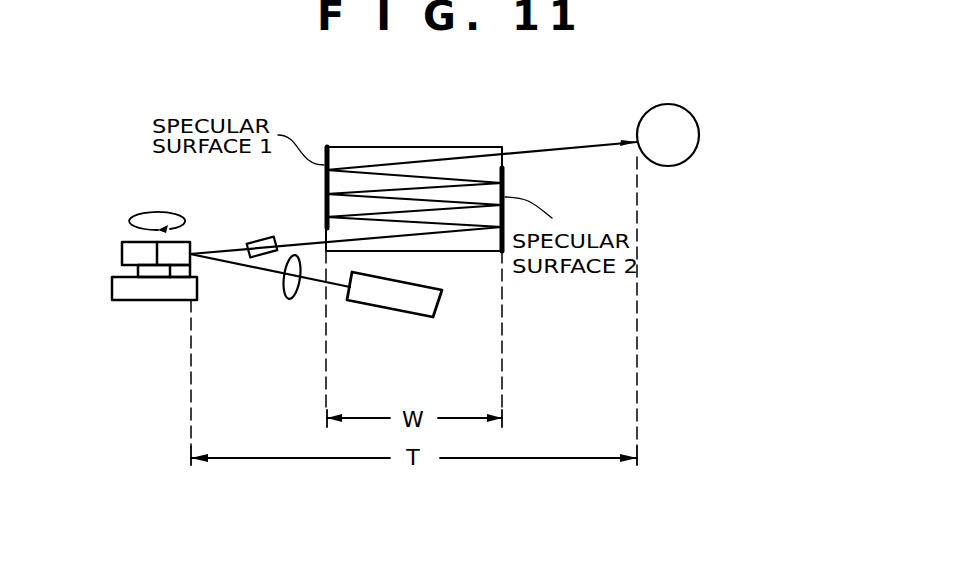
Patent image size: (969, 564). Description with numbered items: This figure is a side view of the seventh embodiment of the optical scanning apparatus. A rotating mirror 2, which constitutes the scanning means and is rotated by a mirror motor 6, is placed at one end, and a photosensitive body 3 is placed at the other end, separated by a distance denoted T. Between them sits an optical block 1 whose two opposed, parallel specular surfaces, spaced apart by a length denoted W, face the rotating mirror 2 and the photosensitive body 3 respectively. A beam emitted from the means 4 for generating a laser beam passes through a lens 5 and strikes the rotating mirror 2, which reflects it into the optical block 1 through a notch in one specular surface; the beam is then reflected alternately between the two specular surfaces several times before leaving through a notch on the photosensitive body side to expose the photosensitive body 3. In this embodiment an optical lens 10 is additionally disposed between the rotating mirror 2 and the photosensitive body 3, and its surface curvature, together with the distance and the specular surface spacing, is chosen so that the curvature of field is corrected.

The optical block 1 is at (447, 147).
The rotating mirror 2 is at (122, 250).
The photosensitive body 3 is at (677, 167).
The means for generating laser beam 4 is at (432, 318).
The lens 5 is at (287, 297).
The mirror motor 6 is at (128, 302).
The optical lens 10 is at (260, 238).